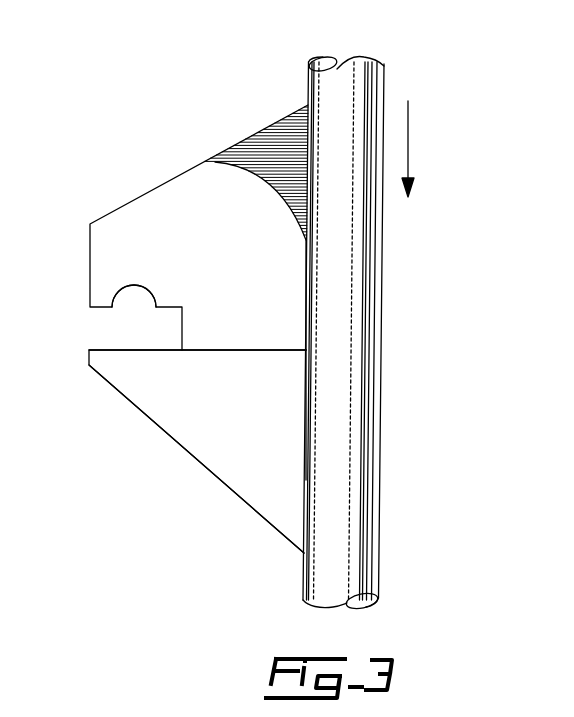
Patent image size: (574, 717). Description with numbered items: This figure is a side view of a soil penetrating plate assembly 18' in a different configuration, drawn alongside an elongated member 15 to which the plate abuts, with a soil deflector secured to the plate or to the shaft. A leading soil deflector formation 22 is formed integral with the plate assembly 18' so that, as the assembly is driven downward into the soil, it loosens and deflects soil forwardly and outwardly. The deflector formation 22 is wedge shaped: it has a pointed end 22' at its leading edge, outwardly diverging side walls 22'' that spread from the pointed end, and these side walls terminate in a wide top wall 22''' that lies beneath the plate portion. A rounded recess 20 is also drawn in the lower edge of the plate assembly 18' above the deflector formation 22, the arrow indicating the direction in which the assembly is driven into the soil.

The tube 15 is at (348, 230).
The soil penetrating plate assembly 18' is at (198, 227).
The notch 20 is at (133, 285).
The soil deflector formation 22 is at (189, 451).
The pointed end 22' is at (196, 477).
The outwardly diverging side walls 22'' is at (380, 415).
The wide top wall 22''' is at (380, 295).